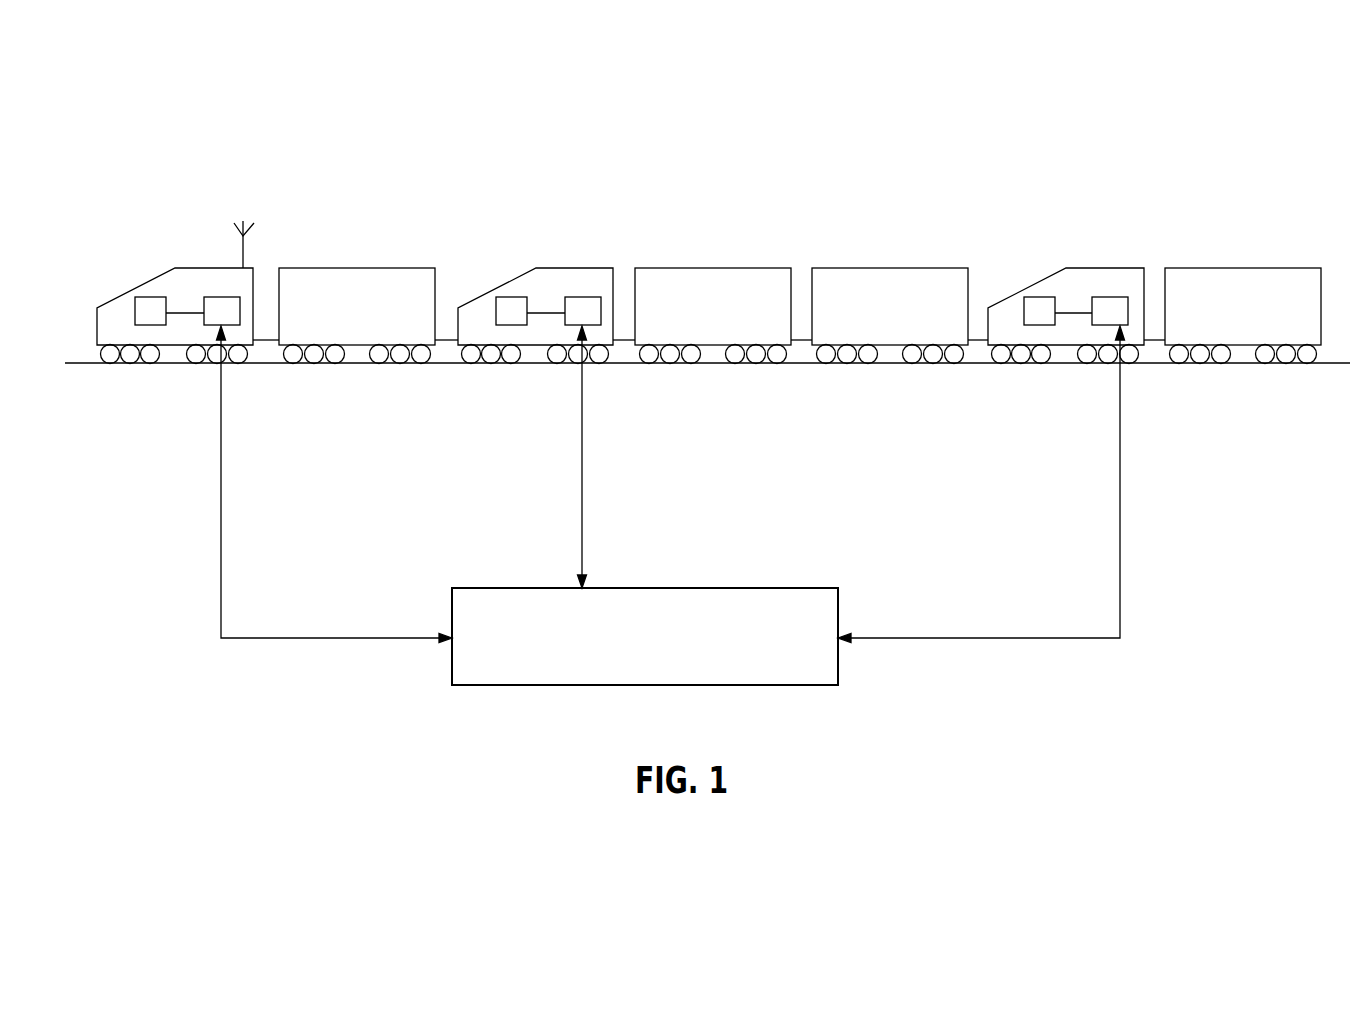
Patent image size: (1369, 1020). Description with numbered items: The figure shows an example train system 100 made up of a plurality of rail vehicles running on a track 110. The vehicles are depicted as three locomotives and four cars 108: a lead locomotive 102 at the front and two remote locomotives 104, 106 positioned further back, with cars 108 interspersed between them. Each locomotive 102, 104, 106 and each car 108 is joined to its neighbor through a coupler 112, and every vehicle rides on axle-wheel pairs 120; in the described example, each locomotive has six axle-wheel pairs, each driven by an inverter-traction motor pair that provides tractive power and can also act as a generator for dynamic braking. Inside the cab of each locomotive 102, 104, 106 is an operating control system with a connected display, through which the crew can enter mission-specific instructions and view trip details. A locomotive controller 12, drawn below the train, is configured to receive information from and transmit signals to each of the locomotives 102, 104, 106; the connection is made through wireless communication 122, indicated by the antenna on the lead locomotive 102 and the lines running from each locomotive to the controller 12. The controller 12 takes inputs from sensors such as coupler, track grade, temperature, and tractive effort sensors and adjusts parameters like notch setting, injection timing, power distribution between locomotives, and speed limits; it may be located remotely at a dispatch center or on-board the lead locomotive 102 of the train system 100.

The train system 100 is at (1138, 107).
The lead locomotive 102 is at (206, 305).
The remote locomotive 104 is at (542, 301).
The remote locomotive 106 is at (1067, 301).
The car 108 is at (348, 268).
The track 110 is at (1277, 364).
The coupler 112 is at (263, 341).
The axle-wheel pair 120 is at (110, 361).
The wireless communication 122 is at (250, 226).
The locomotive controller 12 is at (645, 636).